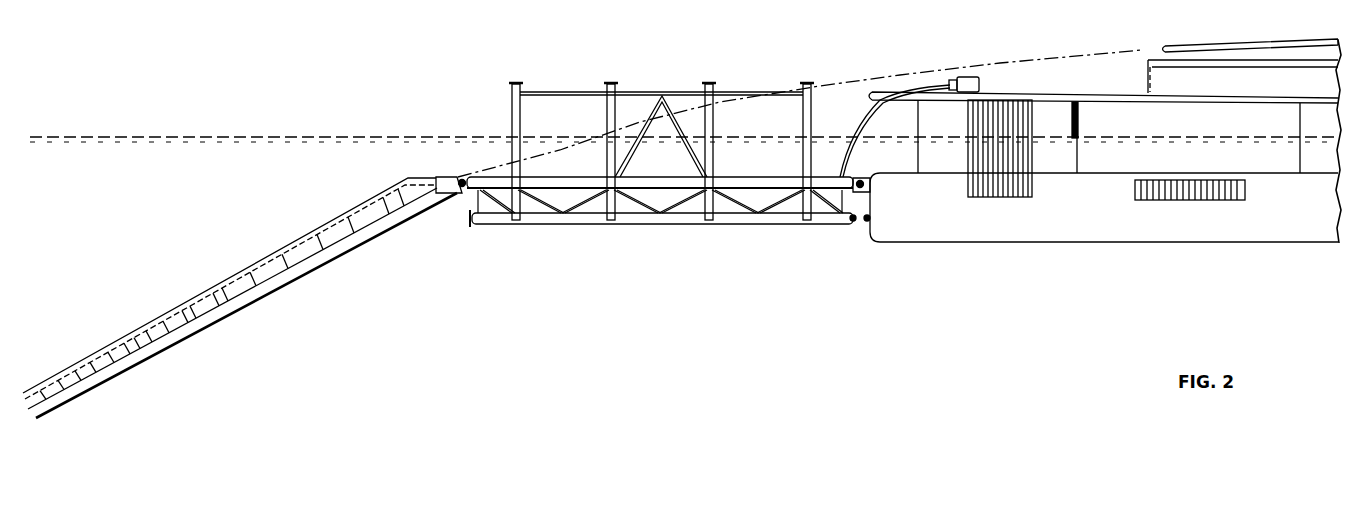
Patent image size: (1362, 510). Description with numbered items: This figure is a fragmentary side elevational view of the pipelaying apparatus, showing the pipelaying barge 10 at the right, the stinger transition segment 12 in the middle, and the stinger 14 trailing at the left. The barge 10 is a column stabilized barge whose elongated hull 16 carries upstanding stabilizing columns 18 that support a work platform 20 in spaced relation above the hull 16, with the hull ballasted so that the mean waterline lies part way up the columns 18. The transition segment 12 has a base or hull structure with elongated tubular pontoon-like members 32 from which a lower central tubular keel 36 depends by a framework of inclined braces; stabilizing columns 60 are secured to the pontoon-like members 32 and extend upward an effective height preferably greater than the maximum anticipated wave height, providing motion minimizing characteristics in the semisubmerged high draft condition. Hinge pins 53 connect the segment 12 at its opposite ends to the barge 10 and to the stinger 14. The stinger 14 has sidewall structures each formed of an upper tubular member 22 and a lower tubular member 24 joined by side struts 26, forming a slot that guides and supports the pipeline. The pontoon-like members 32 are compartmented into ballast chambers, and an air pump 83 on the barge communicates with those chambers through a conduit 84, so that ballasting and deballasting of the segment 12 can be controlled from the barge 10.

The pipelaying barge 10 is at (1088, 168).
The stinger transition segment 12 is at (651, 145).
The stinger 14 is at (242, 297).
The hull 16 is at (930, 243).
The stabilizing column 18 is at (1079, 118).
The work platform 20 is at (1146, 60).
The tubular member 22 is at (273, 258).
The tubular member 24 is at (180, 344).
The side strut 26 is at (347, 255).
The pontoon-like member 32 is at (771, 177).
The tubular keel 36 is at (735, 224).
The hinge pin 53 is at (463, 192).
The stabilizing column 60 is at (512, 116).
The air pump 83 is at (979, 83).
The conduit 84 is at (877, 118).